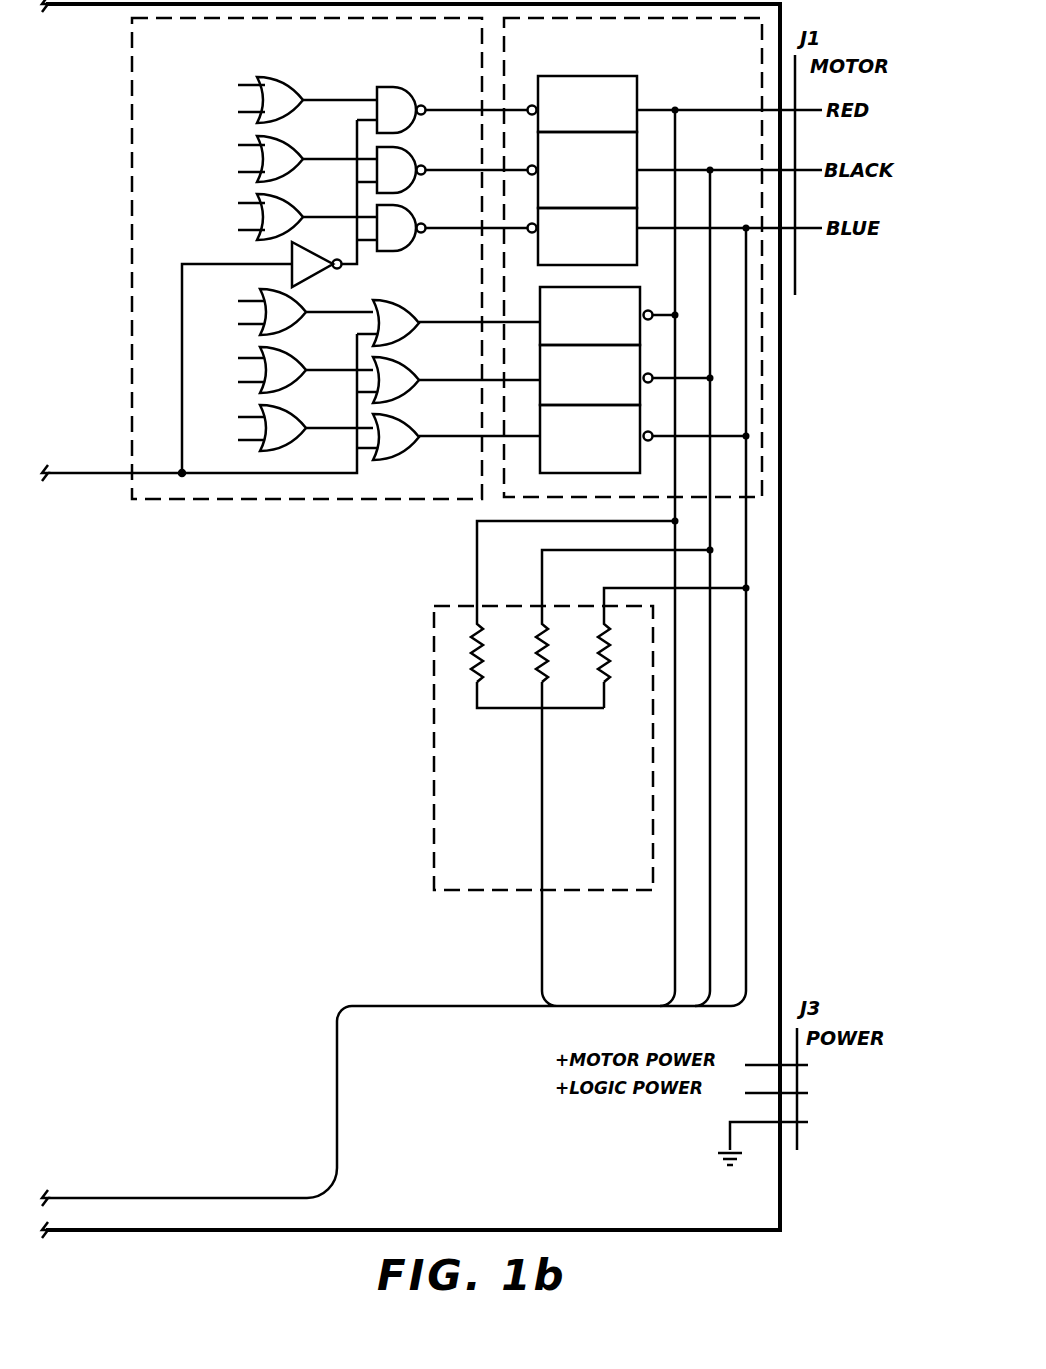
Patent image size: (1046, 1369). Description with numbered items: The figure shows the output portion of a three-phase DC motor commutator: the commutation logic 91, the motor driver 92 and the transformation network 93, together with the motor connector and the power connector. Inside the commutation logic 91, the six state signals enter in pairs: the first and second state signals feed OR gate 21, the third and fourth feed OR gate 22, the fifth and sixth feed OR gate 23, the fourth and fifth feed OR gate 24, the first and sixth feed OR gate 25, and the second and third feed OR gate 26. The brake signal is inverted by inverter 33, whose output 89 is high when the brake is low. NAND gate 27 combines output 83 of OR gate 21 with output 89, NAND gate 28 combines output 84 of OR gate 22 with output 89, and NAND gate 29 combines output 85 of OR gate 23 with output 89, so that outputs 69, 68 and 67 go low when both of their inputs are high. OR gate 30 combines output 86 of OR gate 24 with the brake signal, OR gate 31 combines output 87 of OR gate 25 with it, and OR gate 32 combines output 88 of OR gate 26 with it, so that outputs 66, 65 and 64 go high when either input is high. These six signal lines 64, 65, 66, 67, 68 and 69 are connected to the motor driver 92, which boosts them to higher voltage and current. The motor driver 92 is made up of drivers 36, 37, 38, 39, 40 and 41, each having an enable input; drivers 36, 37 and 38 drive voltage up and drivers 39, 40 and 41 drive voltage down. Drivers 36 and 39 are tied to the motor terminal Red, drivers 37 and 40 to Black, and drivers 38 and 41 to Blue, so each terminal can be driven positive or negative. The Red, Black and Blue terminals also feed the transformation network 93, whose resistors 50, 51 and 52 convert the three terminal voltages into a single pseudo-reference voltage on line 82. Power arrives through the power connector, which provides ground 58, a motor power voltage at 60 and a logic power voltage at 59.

The OR gate 21 is at (270, 100).
The OR gate 22 is at (270, 159).
The OR gate 23 is at (270, 217).
The OR gate 24 is at (272, 312).
The OR gate 25 is at (272, 370).
The OR gate 26 is at (272, 428).
The NAND gate 27 is at (391, 110).
The NAND gate 28 is at (391, 170).
The NAND gate 29 is at (391, 228).
The OR gate 30 is at (388, 323).
The OR gate 31 is at (388, 380).
The OR gate 32 is at (388, 437).
The inverter 33 is at (317, 264).
The driver 36 is at (587, 104).
The driver 37 is at (587, 170).
The driver 38 is at (587, 236).
The driver 39 is at (590, 316).
The driver 40 is at (590, 375).
The driver 41 is at (590, 439).
The resistor 50 is at (573, 614).
The resistor 51 is at (623, 770).
The resistor 52 is at (672, 648).
The ground 58 is at (812, 1124).
The logic power voltage 59 is at (812, 1095).
The motor power voltage 60 is at (812, 1067).
The output of OR gate 32 64 is at (430, 436).
The output of OR gate 31 65 is at (430, 380).
The output of OR gate 30 66 is at (435, 322).
The output of NAND gate 29 67 is at (438, 228).
The output of NAND gate 28 68 is at (438, 170).
The output of NAND gate 27 69 is at (438, 110).
The pseudo-reference line 82 is at (544, 965).
The output of OR gate 21 83 is at (318, 100).
The output of OR gate 22 84 is at (316, 159).
The output of OR gate 23 85 is at (316, 217).
The output of OR gate 24 86 is at (318, 312).
The output of OR gate 25 87 is at (316, 370).
The output of OR gate 26 88 is at (316, 428).
The output of inverter 33 89 is at (360, 263).
The commutation logic 91 is at (442, 48).
The motor driver 92 is at (714, 58).
The transformation network 93 is at (506, 908).